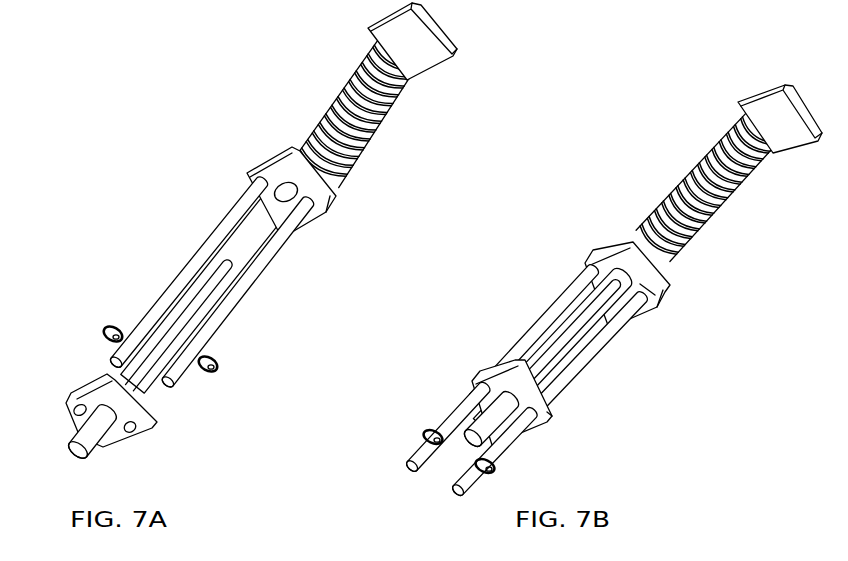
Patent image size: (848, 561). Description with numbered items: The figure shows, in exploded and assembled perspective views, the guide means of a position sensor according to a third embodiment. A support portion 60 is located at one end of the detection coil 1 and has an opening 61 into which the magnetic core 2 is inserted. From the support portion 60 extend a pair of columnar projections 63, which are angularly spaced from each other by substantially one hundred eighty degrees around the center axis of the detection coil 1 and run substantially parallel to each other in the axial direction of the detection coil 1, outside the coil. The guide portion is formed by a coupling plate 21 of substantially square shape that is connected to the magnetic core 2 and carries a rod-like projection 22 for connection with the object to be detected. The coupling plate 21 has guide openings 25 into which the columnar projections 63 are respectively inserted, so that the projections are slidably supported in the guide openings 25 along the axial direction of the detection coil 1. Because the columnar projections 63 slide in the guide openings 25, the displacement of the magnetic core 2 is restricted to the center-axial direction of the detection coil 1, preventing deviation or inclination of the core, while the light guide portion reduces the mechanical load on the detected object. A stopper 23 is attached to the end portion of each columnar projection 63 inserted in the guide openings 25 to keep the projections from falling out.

In FIG. 7A, the detection coil 1 is at (340, 95).
In FIG. 7B, the detection coil 1 is at (705, 185).
In FIG. 7A, the magnetic core 2 is at (191, 313).
In FIG. 7B, the magnetic core 2 is at (572, 318).
In FIG. 7A, the coupling plate 21 is at (105, 390).
In FIG. 7B, the coupling plate 21 is at (507, 380).
In FIG. 7A, the rod-like projection 22 is at (95, 428).
In FIG. 7B, the rod-like projection 22 is at (493, 418).
In FIG. 7A, the stopper 23 is at (108, 325).
In FIG. 7B, the stopper 23 is at (430, 433).
In FIG. 7A, the guide openings 25 is at (76, 415).
In FIG. 7B, the guide openings 25 is at (555, 415).
In FIG. 7A, the support portion 60 is at (290, 153).
In FIG. 7B, the support portion 60 is at (625, 262).
In FIG. 7A, the opening 61 is at (287, 193).
In FIG. 7B, the opening 61 is at (632, 287).
In FIG. 7A, the columnar projections 63 is at (275, 247).